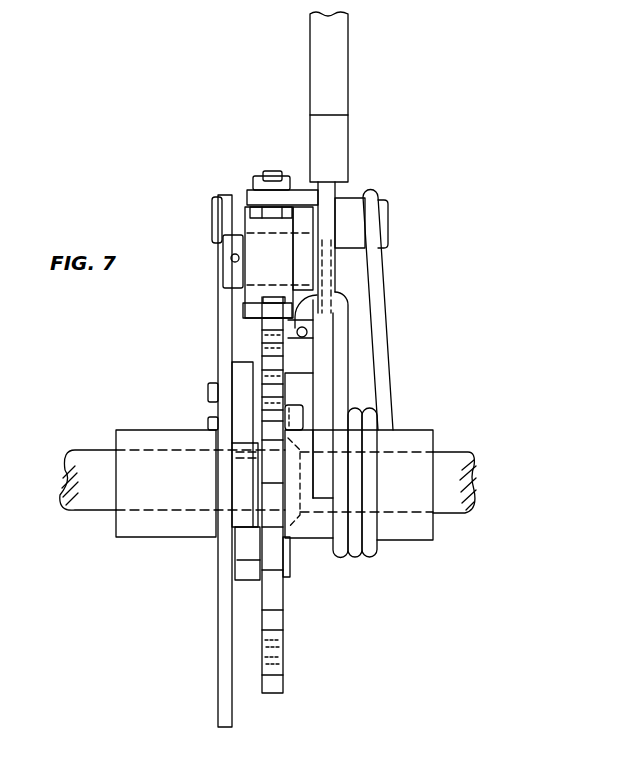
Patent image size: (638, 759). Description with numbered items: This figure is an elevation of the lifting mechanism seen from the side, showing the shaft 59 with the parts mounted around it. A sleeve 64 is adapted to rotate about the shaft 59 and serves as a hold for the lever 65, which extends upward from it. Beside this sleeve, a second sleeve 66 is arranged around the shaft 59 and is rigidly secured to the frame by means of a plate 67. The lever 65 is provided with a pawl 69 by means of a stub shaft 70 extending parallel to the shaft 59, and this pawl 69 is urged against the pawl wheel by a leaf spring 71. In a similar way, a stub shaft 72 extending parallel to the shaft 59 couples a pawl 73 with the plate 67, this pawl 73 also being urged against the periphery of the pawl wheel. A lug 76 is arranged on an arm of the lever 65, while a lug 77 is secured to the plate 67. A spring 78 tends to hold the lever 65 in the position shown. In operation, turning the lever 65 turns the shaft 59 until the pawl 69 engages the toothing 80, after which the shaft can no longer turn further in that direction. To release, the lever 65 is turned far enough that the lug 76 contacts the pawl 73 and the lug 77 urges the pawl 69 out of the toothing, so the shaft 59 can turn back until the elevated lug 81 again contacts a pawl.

The shaft 59 is at (470, 468).
The sleeve 64 is at (447, 425).
The lever 65 is at (335, 55).
The sleeve 66 is at (155, 437).
The plate 67 is at (222, 607).
The pawl 69 is at (260, 242).
The stub shaft 70 is at (233, 273).
The leaf spring 71 is at (252, 187).
The stub shaft 72 is at (305, 415).
The pawl 73 is at (285, 550).
The lug 76 is at (298, 348).
The lug 77 is at (240, 372).
The spring 78 is at (375, 557).
The toothing 80 is at (272, 605).
The elevated lug 81 is at (272, 680).